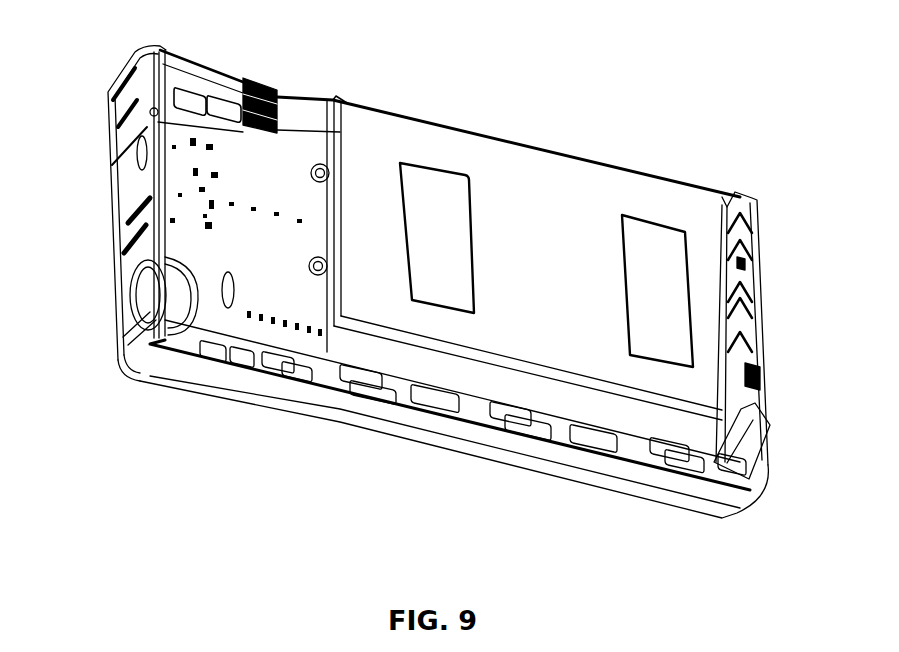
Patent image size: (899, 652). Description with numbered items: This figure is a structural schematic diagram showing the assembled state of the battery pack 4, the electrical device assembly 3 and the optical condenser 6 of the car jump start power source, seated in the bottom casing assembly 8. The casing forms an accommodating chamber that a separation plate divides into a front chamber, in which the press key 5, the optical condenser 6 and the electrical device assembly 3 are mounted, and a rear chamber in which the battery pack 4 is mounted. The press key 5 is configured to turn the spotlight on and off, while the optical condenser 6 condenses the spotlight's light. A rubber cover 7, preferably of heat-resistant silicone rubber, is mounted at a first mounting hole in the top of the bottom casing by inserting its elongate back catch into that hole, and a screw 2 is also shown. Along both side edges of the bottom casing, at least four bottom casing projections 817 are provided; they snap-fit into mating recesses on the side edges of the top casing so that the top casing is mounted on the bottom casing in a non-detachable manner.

The screw 2 is at (318, 163).
The electrical device assembly 3 is at (289, 128).
The battery pack 4 is at (469, 160).
The press key 5 is at (110, 187).
The optical condenser 6 is at (141, 297).
The rubber cover 7 is at (110, 90).
The bottom casing assembly 8 is at (153, 380).
The bottom casing projection 817 is at (766, 352).